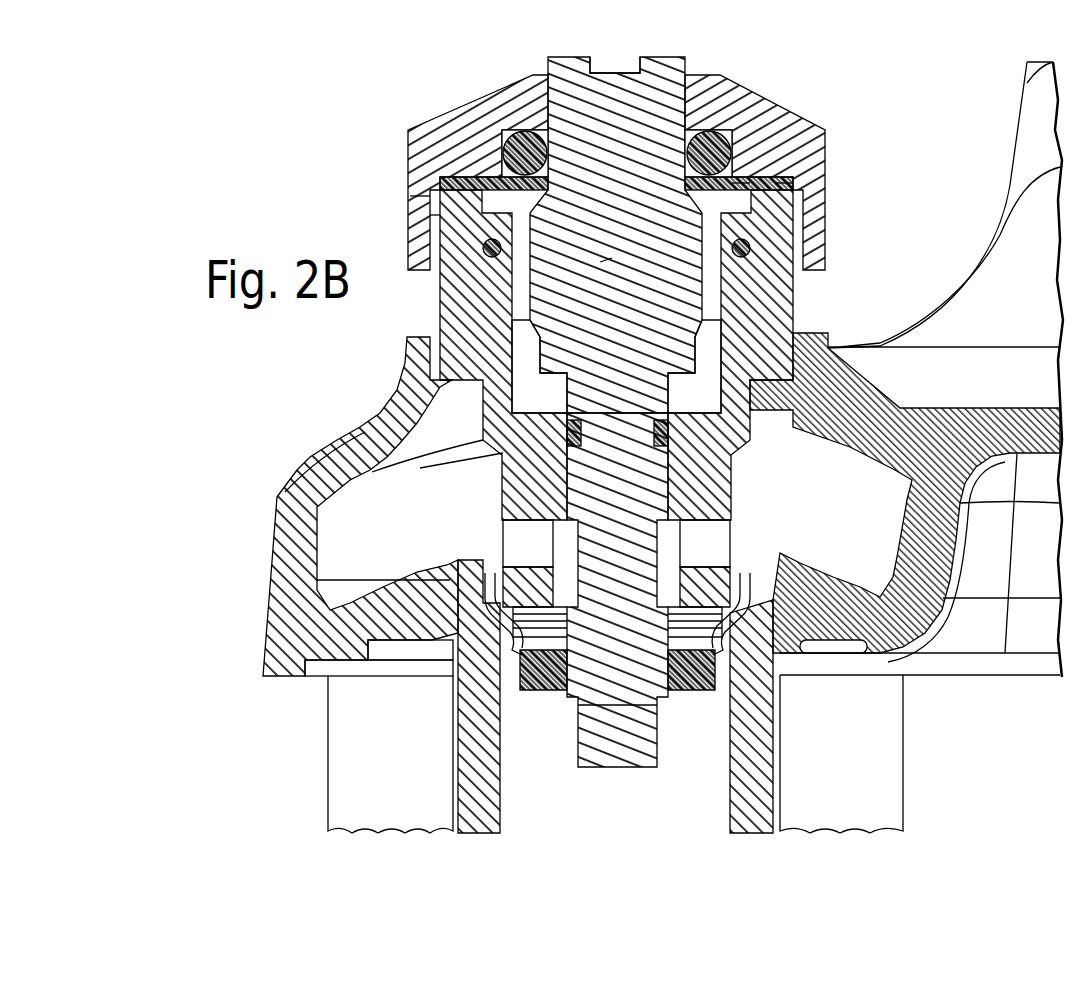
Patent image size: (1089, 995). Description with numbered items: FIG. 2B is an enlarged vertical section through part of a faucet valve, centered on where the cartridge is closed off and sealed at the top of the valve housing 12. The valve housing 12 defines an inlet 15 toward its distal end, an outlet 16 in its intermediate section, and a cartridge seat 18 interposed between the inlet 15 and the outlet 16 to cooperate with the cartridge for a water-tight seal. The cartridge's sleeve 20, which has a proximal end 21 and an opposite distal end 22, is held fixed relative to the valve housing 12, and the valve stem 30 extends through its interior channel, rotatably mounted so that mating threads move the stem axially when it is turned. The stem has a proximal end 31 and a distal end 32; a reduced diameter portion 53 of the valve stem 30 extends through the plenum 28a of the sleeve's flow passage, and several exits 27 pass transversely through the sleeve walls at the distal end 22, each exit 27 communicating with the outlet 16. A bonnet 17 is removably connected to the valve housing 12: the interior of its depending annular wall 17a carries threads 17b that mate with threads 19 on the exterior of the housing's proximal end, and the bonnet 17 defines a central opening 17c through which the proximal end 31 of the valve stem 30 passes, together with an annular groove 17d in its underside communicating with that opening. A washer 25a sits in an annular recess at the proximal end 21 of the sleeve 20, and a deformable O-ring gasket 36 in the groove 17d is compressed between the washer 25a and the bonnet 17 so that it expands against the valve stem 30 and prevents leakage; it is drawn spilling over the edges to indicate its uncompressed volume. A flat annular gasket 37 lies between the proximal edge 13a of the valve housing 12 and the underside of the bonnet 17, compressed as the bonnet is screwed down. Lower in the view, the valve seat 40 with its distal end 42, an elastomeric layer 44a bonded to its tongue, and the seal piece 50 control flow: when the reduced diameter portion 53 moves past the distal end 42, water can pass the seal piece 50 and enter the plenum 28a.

The valve housing 12 is at (283, 527).
The proximal edge 13a is at (788, 178).
The inlet 15 is at (683, 805).
The outlet 16 is at (903, 480).
The bonnet 17 is at (450, 108).
The annular wall 17a is at (417, 207).
The threads 17b is at (438, 223).
The central opening 17c is at (587, 72).
The annular groove 17d is at (633, 280).
The cartridge seat 18 is at (747, 607).
The threads 19 is at (802, 225).
The sleeve 20 is at (498, 510).
The proximal end 21 is at (500, 177).
The distal end 22 is at (457, 647).
The washer 25a is at (735, 178).
The exit 27 is at (503, 548).
The plenum 28a is at (570, 580).
The valve stem 30 is at (610, 83).
The proximal end 31 is at (713, 137).
The distal end 32 is at (583, 770).
The sealing gasket 36 is at (718, 178).
The annular gasket 37 is at (443, 177).
The valve seat 40 is at (720, 630).
The distal end 42 is at (527, 657).
The elastomeric layer 44a is at (780, 650).
The seal piece 50 is at (537, 690).
The reduced diameter portion 53 is at (562, 535).